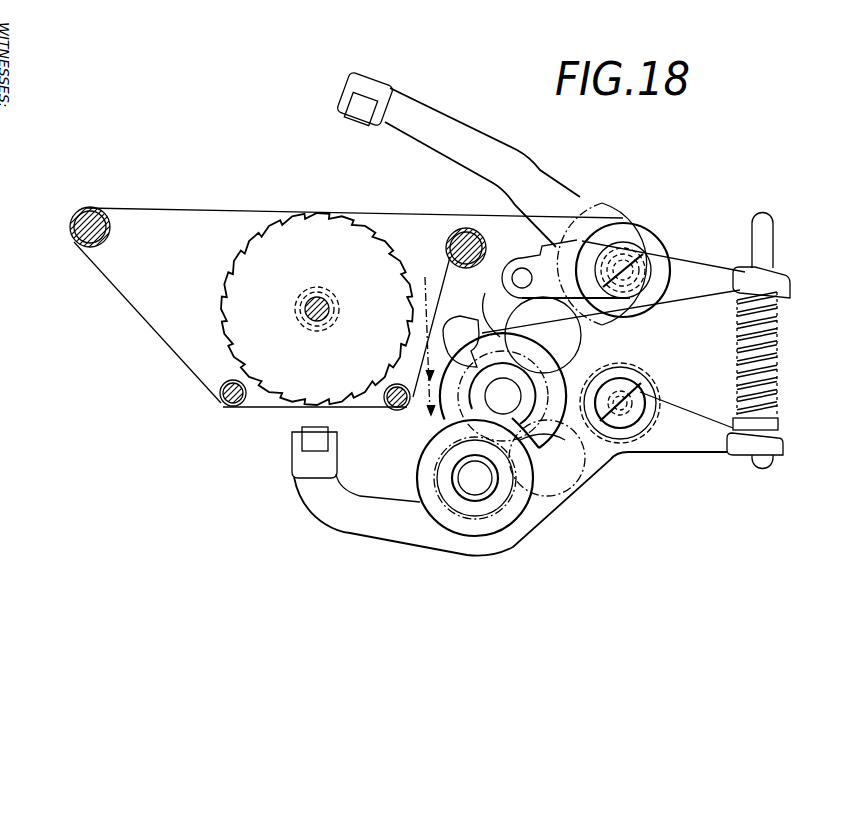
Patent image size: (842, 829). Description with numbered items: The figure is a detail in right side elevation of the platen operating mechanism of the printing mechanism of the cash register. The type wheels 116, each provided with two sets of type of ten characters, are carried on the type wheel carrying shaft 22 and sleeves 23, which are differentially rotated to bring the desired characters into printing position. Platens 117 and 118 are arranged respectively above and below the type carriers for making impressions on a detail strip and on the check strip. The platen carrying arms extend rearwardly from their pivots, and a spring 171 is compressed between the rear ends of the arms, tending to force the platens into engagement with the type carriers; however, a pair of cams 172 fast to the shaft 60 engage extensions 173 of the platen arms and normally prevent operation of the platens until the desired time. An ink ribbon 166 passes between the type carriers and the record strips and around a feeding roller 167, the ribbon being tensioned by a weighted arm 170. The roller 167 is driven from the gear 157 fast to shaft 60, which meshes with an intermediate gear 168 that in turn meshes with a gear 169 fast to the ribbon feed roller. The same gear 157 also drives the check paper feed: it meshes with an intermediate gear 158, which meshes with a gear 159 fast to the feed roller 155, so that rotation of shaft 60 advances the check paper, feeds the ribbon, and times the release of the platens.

The platen 117 is at (433, 112).
The ink ribbon 166 is at (200, 210).
The type wheel 116 is at (227, 276).
The sleeve 23 is at (308, 296).
The type wheel carrying shaft 22 is at (331, 309).
The weighted arm 170 is at (574, 252).
The feeding roller 167 is at (648, 228).
The gear 169 is at (680, 235).
The intermediate gear 168 is at (590, 338).
The spring 171 is at (772, 395).
The shaft 60 is at (490, 397).
The cam 172 is at (480, 343).
The extension 173 is at (529, 450).
The gear 157 is at (560, 370).
The intermediate gear 158 is at (592, 458).
The gear 159 is at (500, 510).
The feed roller 155 is at (447, 530).
The platen 118 is at (297, 468).